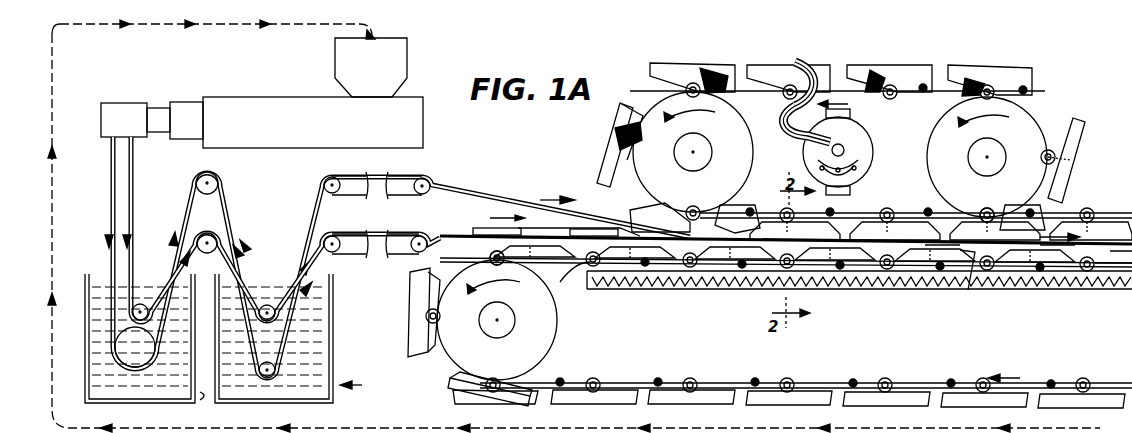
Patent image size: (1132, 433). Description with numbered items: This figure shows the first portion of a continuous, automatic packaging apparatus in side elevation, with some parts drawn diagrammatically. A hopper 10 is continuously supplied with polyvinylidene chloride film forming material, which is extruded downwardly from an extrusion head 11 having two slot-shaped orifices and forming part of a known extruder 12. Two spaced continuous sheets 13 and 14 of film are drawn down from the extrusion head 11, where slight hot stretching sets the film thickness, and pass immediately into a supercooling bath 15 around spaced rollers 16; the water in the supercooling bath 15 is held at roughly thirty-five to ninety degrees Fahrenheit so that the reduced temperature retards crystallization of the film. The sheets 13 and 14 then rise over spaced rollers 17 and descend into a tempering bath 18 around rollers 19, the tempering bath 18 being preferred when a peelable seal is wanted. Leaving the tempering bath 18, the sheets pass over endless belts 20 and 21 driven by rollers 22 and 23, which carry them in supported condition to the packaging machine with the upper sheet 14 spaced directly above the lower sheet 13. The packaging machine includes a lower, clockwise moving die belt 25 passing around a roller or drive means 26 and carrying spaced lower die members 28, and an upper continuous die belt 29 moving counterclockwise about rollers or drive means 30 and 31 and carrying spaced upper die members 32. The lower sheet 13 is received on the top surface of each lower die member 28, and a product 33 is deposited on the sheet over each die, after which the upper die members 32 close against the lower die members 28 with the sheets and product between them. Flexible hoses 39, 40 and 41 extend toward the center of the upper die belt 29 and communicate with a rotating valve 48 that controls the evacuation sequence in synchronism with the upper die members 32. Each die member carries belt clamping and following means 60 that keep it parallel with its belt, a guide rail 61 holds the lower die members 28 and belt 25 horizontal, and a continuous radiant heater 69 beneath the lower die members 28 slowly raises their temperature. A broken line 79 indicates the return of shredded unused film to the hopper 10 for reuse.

The hopper 10 is at (407, 48).
The extrusion head 11 is at (127, 103).
The extruder 12 is at (305, 97).
The continuous sheet 13 is at (113, 174).
The continuous sheet 14 is at (134, 178).
The supercooling bath 15 is at (100, 302).
The rollers 16 is at (143, 356).
The rollers 17 is at (209, 182).
The tempering bath 18 is at (330, 302).
The rollers 19 is at (272, 303).
The endless belt 20 is at (352, 260).
The endless belt 21 is at (348, 195).
The rollers 22 is at (336, 238).
The rollers 23 is at (324, 182).
The lower die belt 25 is at (634, 383).
The roller 26 is at (556, 324).
The lower die member 28 is at (412, 316).
The upper die belt 29 is at (740, 94).
The roller 30 is at (738, 165).
The roller 31 is at (930, 138).
The upper die member 32 is at (612, 126).
The product 33 is at (488, 228).
The flexible hose 39 is at (832, 142).
The flexible hose 40 is at (785, 140).
The flexible hose 41 is at (787, 120).
The rotating valve 48 is at (868, 170).
The belt clamping and following means 60 is at (930, 84).
The guide rail 61 is at (578, 270).
The radiant heater 69 is at (914, 292).
The broken line 79 is at (52, 126).